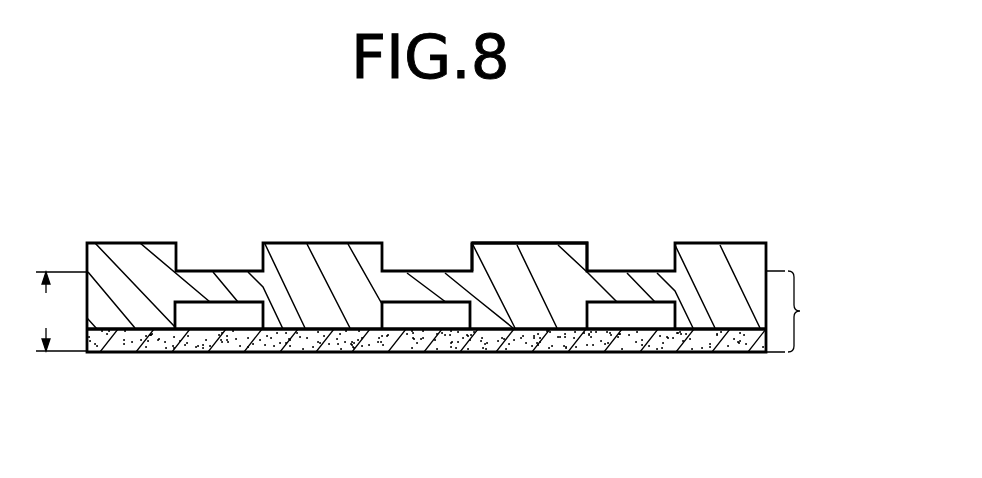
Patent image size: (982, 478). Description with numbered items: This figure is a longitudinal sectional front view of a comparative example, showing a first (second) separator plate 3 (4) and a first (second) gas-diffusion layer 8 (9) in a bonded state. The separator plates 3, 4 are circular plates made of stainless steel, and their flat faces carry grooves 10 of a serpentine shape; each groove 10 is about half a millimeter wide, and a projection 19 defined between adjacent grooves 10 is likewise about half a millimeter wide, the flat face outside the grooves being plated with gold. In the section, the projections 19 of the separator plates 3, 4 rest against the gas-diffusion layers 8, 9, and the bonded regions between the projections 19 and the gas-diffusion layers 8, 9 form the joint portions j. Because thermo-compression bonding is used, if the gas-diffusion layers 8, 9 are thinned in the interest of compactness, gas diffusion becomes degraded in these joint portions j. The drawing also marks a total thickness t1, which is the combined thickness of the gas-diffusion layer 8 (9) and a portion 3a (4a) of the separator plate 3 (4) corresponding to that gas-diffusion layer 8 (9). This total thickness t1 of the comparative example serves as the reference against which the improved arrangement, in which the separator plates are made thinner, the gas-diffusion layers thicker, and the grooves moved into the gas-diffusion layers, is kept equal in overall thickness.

The first separator plate 3 is at (426, 255).
The second separator plate 4 is at (118, 261).
The portion of the first separator plate 3a is at (837, 311).
The portion of the second separator plate 4a is at (837, 311).
The first gas-diffusion layer 8 is at (433, 392).
The second gas-diffusion layer 9 is at (649, 352).
The groove 10 is at (431, 271).
The projection 19 is at (551, 243).
The joint portion j is at (319, 330).
The total thickness t1 is at (60, 311).